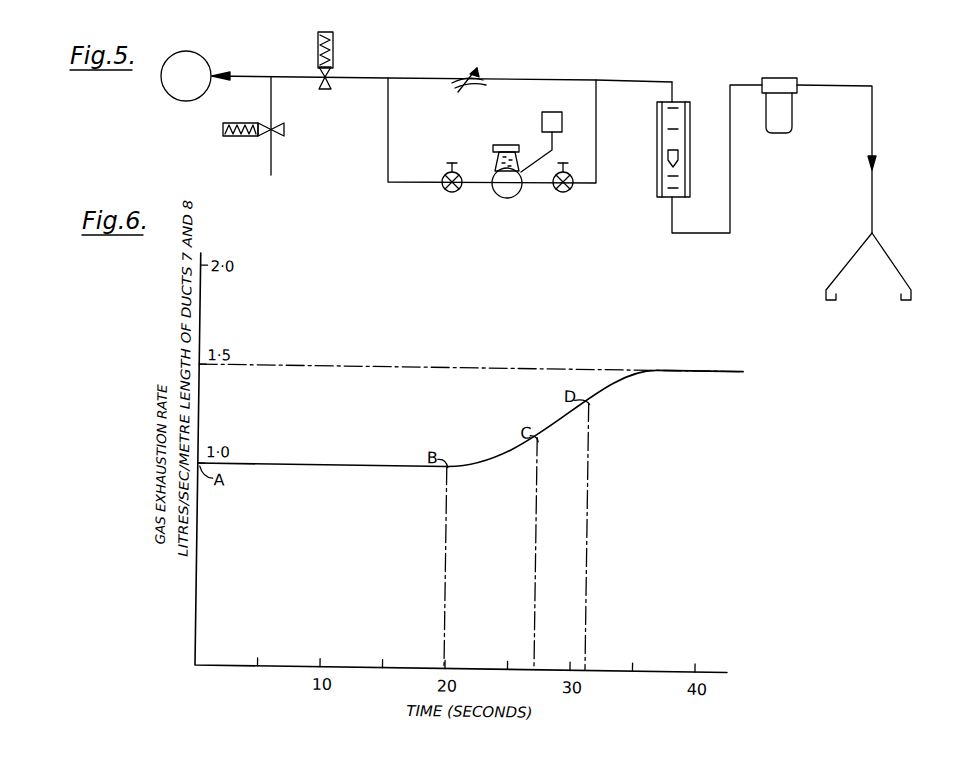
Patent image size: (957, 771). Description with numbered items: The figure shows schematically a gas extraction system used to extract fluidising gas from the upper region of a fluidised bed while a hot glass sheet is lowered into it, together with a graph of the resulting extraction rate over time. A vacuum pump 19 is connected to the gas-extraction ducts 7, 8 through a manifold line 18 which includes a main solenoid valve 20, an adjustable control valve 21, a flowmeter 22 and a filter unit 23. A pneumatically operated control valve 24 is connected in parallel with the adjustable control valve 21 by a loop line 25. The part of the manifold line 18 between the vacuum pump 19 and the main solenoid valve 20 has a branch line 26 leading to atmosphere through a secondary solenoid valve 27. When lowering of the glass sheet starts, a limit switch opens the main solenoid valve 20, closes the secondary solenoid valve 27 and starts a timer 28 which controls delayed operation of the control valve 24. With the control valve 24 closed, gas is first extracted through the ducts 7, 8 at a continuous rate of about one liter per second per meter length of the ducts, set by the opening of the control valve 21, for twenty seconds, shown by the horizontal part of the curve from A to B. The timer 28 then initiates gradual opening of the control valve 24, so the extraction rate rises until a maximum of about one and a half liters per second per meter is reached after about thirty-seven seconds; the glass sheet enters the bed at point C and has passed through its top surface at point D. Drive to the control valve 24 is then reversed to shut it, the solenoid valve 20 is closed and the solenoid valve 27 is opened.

The gas-extraction duct 7 is at (826, 291).
The gas-extraction duct 8 is at (910, 291).
The manifold line 18 is at (360, 77).
The vacuum pump 19 is at (200, 70).
The main solenoid valve 20 is at (329, 86).
The adjustable control valve 21 is at (478, 79).
The flowmeter 22 is at (659, 138).
The filter unit 23 is at (782, 133).
The pneumatically operated control valve 24 is at (507, 198).
The loop line 25 is at (388, 182).
The branch line 26 is at (271, 101).
The secondary solenoid valve 27 is at (240, 137).
The timer 28 is at (543, 112).